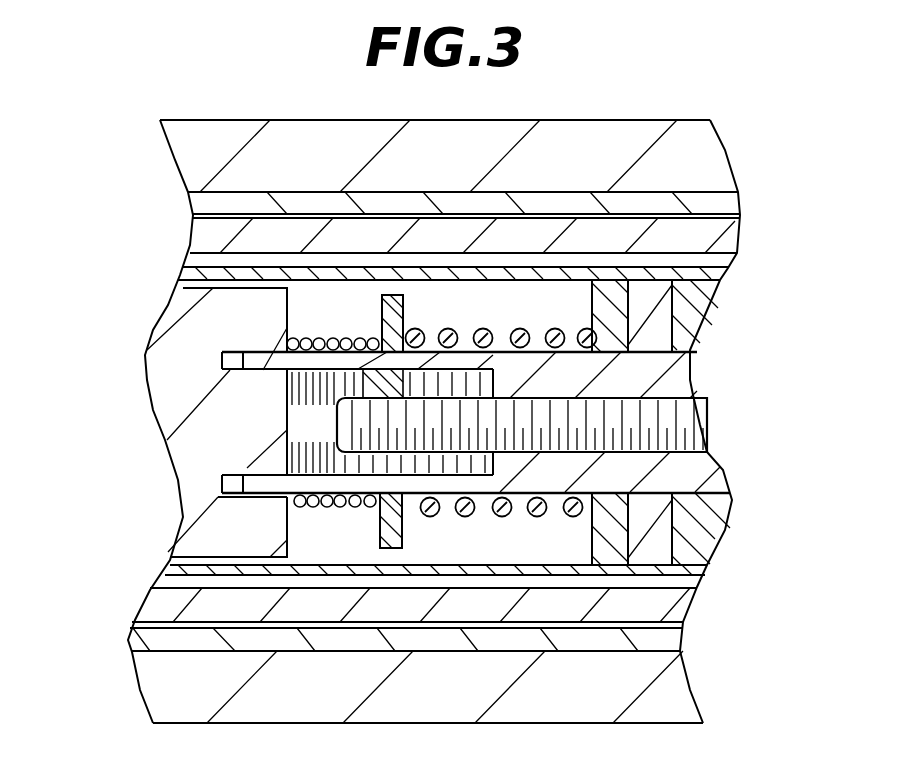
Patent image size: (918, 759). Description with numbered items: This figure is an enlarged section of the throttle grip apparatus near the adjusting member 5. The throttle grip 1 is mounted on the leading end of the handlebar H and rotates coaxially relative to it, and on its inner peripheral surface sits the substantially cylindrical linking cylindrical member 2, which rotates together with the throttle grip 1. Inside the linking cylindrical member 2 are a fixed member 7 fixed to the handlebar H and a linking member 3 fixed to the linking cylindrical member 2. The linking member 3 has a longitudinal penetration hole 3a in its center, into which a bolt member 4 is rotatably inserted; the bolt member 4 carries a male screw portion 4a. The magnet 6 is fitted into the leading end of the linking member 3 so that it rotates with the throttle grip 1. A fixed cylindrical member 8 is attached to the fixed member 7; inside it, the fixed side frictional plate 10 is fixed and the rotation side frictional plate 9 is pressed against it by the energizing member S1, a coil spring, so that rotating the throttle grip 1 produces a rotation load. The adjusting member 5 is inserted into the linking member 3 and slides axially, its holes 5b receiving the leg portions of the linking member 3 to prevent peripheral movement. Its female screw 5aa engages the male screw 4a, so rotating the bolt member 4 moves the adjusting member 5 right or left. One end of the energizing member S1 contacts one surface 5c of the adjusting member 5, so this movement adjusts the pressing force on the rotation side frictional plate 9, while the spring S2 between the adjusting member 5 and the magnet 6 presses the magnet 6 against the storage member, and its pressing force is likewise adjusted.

The throttle grip 1 is at (190, 158).
The linking cylindrical member 2 is at (193, 208).
The handlebar H is at (200, 245).
The fixed cylindrical member 8 is at (183, 277).
The magnet 6 is at (163, 367).
The adjusting member 5 is at (377, 540).
The holes 5b is at (382, 345).
The one surface of the adjusting member 5c is at (400, 525).
The female screw 5aa is at (412, 400).
The energizing member S1 is at (476, 333).
The spring S2 is at (305, 338).
The bolt member 4 is at (700, 438).
The male screw portion 4a is at (443, 503).
The linking member 3 is at (673, 370).
The penetration hole 3a is at (663, 413).
The fixed member 7 is at (703, 293).
The rotation side frictional plate 9 is at (632, 338).
The fixed side frictional plate 10 is at (667, 315).